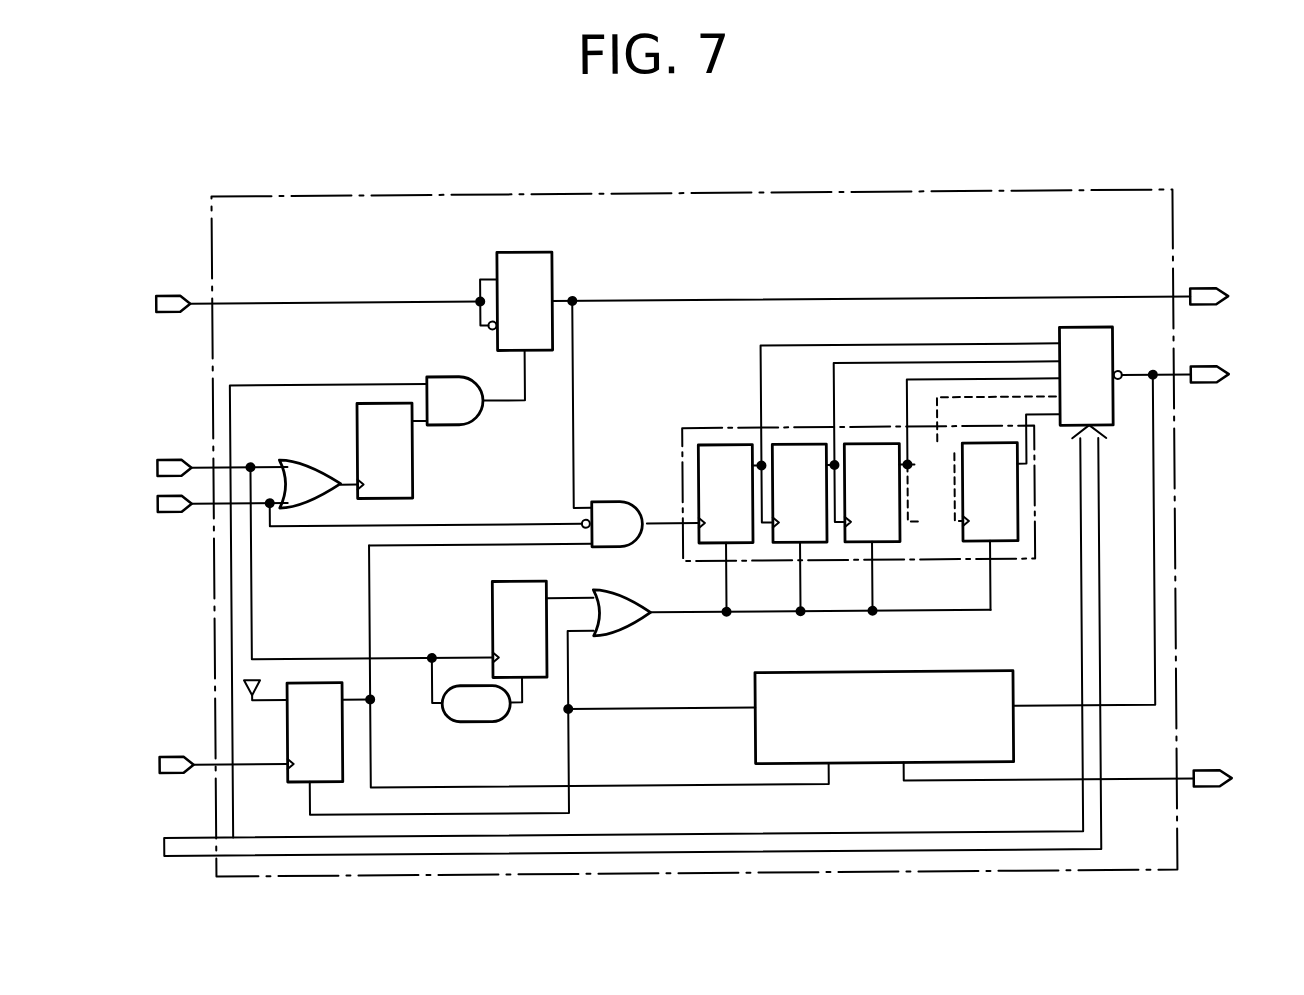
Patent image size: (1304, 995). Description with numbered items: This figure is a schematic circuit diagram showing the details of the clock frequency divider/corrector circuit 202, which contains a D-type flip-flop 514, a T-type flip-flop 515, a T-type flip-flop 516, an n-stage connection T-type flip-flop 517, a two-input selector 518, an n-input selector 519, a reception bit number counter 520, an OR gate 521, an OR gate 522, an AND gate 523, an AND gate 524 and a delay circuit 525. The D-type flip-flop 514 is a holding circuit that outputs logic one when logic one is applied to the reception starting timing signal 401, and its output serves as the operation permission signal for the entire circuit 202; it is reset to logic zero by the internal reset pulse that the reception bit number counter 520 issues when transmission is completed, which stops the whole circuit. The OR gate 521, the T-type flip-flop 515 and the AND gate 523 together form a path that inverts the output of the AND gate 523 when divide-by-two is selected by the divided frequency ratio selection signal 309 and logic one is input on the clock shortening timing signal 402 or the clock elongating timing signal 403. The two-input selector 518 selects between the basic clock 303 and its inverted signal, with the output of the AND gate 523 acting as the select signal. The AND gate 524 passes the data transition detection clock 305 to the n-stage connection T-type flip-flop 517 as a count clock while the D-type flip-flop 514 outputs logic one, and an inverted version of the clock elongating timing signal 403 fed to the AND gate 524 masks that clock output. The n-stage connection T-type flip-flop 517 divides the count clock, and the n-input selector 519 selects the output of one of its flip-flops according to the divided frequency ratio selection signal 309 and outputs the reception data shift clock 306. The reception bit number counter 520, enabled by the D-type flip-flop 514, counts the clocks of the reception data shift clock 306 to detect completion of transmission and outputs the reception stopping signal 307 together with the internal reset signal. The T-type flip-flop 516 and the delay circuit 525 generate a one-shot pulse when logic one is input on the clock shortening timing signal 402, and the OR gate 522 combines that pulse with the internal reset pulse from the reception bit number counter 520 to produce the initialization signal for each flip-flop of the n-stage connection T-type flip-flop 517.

The clock frequency divider/corrector circuit 202 is at (772, 193).
The basic clock 303 is at (285, 309).
The data transition detection clock 305 is at (920, 297).
The reception data shift clock 306 is at (1151, 533).
The reception stopping signal 307 is at (1100, 780).
The divided frequency ratio selection signal 309 is at (605, 647).
The reception starting timing signal 401 is at (199, 764).
The clock shortening timing signal 402 is at (191, 468).
The clock elongating timing signal 403 is at (192, 504).
The D-type flip-flop 514 is at (313, 680).
The T-type flip-flop 515 is at (380, 401).
The T-type flip-flop 516 is at (492, 599).
The n-stage connection T-type flip-flop 517 is at (710, 428).
The 2-input selector 518 is at (540, 251).
The n-input selector 519 is at (1092, 330).
The reception bit number counter 520 is at (872, 673).
The OR gate 521 is at (292, 457).
The OR gate 522 is at (628, 635).
The AND gate 523 is at (463, 424).
The AND gate 524 is at (610, 501).
The delay circuit 525 is at (472, 720).